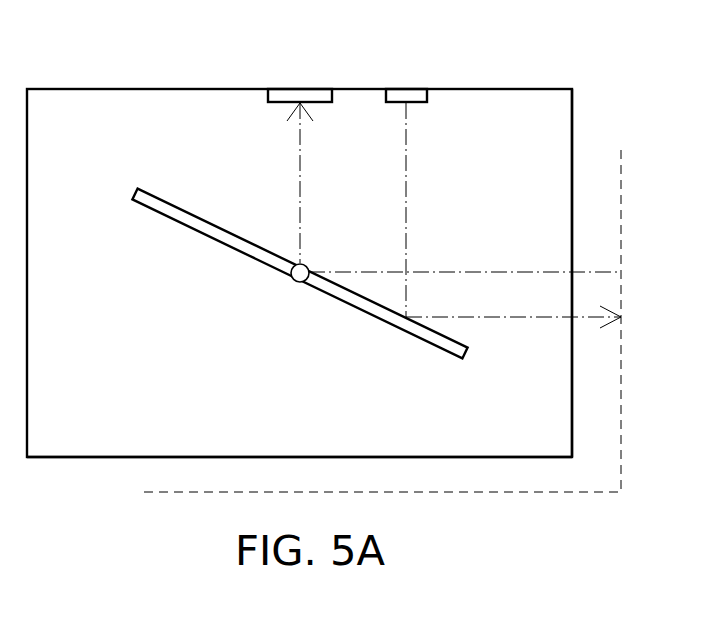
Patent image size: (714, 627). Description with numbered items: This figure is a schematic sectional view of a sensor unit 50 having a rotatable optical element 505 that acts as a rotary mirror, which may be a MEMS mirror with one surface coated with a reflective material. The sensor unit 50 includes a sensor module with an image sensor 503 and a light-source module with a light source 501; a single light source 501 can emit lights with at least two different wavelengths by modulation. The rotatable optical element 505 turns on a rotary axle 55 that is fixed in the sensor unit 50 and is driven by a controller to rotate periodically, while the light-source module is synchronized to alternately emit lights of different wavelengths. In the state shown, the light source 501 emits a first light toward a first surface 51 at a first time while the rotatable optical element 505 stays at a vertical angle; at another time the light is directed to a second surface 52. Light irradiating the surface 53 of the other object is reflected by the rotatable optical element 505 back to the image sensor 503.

The sensor unit 50 is at (582, 80).
The first surface 51 is at (80, 459).
The second surface 52 is at (573, 135).
The surface of the other object 53 is at (622, 216).
The rotary axle 55 is at (293, 282).
The light source 501 is at (406, 95).
The image sensor 503 is at (300, 95).
The rotatable optical element 505 is at (212, 230).